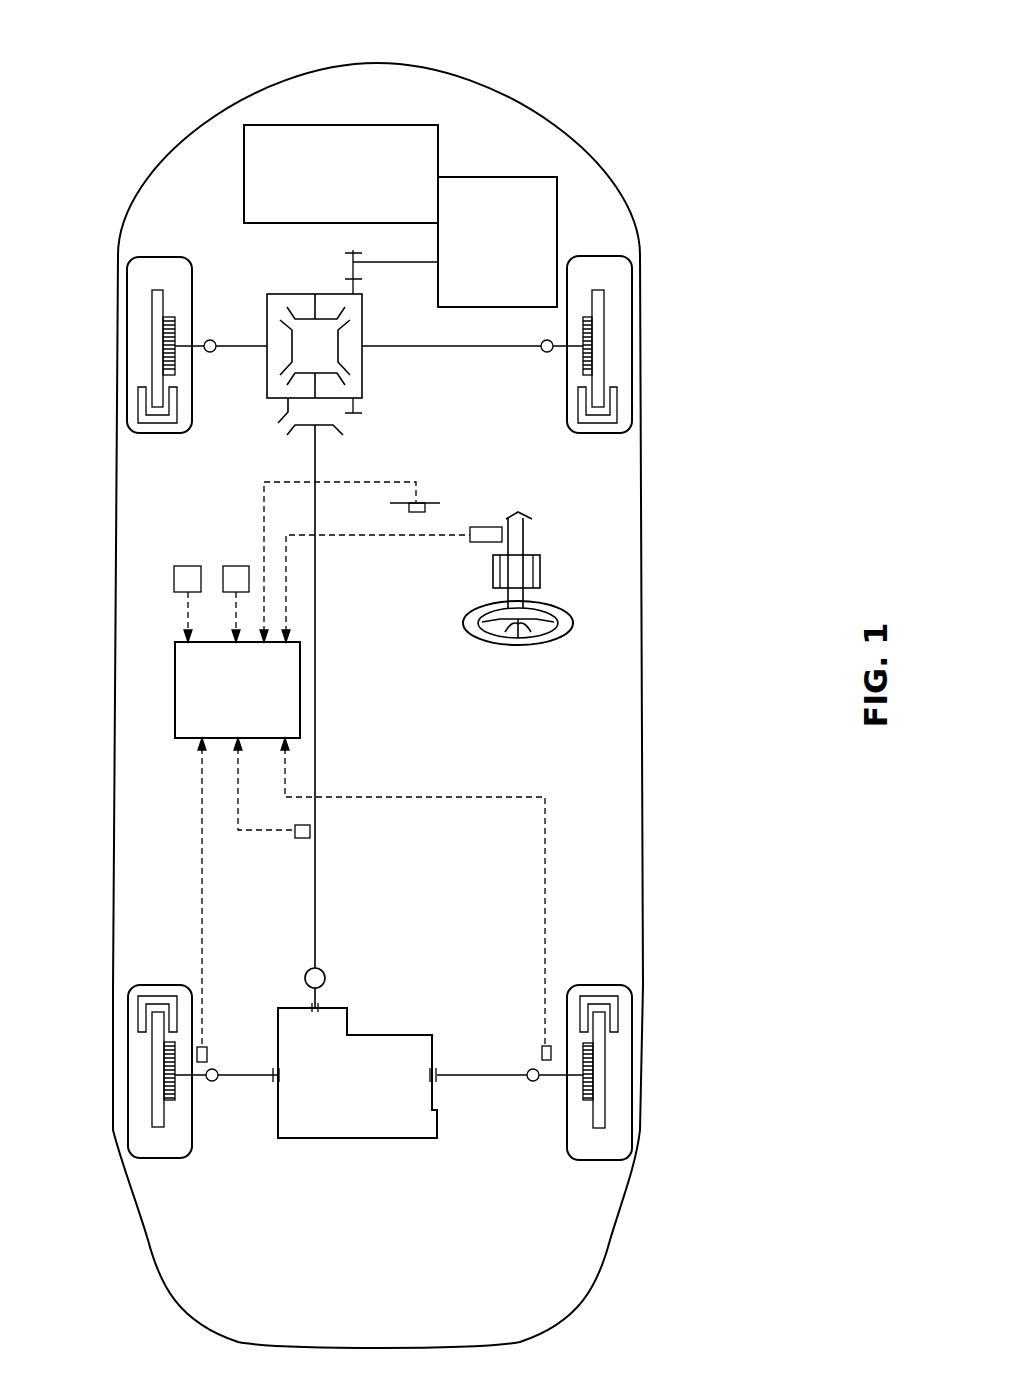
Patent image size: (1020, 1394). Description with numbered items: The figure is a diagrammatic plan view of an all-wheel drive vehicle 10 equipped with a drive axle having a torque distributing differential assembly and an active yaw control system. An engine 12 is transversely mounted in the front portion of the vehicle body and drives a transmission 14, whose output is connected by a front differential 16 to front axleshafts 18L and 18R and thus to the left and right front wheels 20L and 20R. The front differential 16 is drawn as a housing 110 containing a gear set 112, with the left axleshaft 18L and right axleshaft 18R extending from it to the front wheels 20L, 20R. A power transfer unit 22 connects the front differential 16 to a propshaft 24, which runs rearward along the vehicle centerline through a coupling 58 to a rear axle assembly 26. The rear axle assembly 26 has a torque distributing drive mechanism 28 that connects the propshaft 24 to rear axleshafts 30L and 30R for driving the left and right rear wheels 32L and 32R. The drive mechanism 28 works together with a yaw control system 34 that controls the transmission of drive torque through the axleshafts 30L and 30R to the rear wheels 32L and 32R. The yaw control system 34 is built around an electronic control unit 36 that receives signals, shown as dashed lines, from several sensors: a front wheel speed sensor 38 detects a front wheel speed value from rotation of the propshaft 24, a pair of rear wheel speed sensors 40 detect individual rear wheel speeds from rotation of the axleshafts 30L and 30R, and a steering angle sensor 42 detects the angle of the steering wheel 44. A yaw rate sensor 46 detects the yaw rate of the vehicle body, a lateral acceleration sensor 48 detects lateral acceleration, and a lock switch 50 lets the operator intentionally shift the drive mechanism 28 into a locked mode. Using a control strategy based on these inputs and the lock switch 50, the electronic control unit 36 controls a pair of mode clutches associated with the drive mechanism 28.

The all-wheel drive vehicle 10 is at (664, 496).
The engine 12 is at (327, 137).
The transmission 14 is at (500, 190).
The front differential 16 is at (317, 344).
The front axleshaft 18L is at (237, 348).
The front axleshaft 18R is at (495, 348).
The left front wheel 20L is at (130, 259).
The right front wheel 20R is at (628, 256).
The power transfer unit 22 is at (268, 440).
The propshaft 24 is at (315, 688).
The rear axle assembly 26 is at (379, 1083).
The torque distributing drive mechanism 28 is at (362, 1162).
The axleshaft 30L is at (238, 1077).
The axleshaft 30R is at (495, 1077).
The left rear wheel 32L is at (130, 992).
The right rear wheel 32R is at (630, 990).
The yaw control system 34 is at (293, 764).
The electronic control unit 36 is at (193, 693).
The front wheel speed sensor 38 is at (297, 842).
The rear wheel speed sensors 40 is at (208, 1052).
The steering angle sensor 42 is at (480, 528).
The steering wheel 44 is at (550, 633).
The yaw rate sensor 46 is at (235, 572).
The lateral acceleration sensor 48 is at (185, 572).
The lock switch 50 is at (415, 514).
The coupling 58 is at (320, 1002).
The differential housing 110 is at (290, 294).
The differential gear set 112 is at (267, 309).